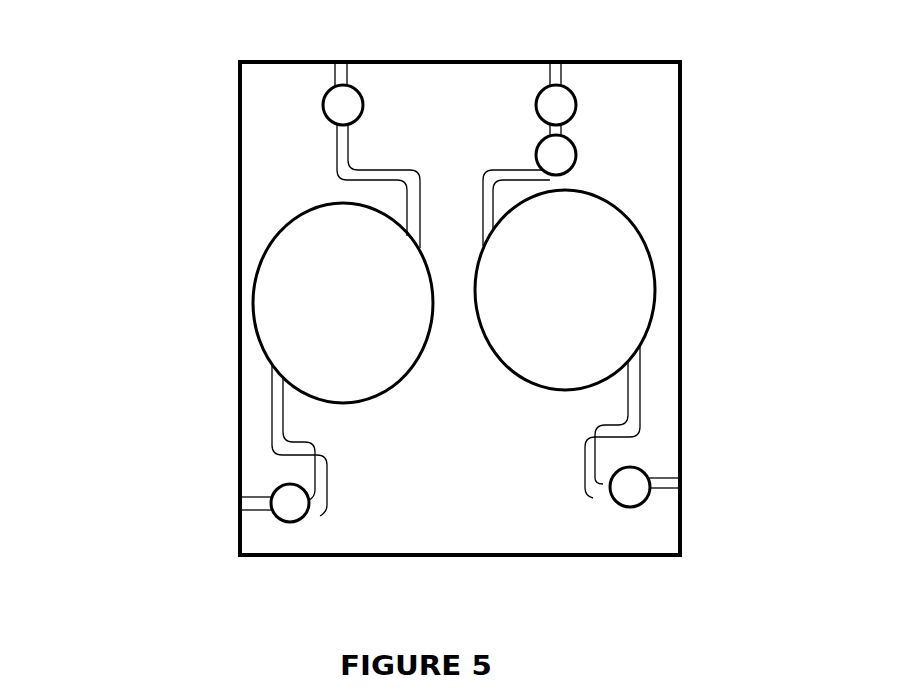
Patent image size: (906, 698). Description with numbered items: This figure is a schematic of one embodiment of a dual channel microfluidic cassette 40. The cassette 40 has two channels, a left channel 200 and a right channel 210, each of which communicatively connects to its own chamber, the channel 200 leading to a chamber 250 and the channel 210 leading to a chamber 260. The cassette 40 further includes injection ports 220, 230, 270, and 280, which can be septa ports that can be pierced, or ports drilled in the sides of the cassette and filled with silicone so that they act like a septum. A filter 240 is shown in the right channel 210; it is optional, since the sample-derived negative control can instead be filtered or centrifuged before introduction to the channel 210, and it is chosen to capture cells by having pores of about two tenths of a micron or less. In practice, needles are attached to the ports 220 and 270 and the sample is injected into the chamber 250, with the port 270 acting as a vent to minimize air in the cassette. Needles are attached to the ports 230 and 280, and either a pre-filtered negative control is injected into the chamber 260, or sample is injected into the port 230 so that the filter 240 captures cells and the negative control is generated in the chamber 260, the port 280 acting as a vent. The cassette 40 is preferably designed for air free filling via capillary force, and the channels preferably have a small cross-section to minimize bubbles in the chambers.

The dual channel microfluidic cassette 40 is at (142, 108).
The channel 200 is at (339, 60).
The channel 210 is at (560, 61).
The injection port 220 is at (330, 103).
The injection port 230 is at (560, 103).
The filter 240 is at (561, 152).
The chamber 250 is at (295, 301).
The chamber 260 is at (625, 297).
The injection port 270 is at (278, 500).
The injection port 280 is at (636, 487).